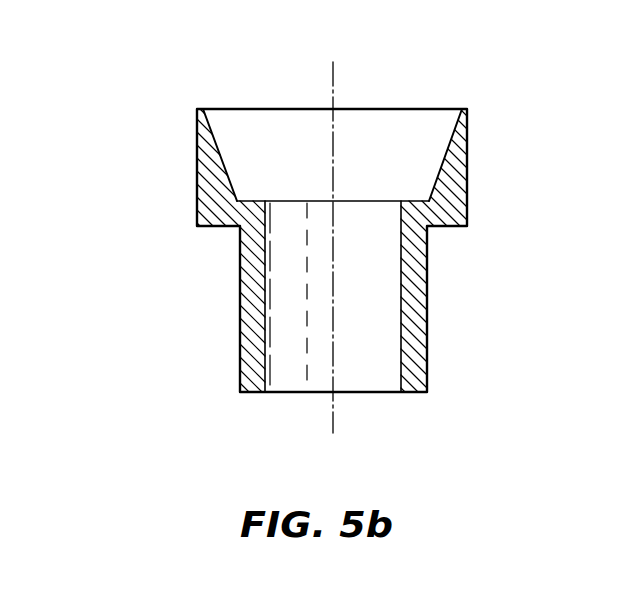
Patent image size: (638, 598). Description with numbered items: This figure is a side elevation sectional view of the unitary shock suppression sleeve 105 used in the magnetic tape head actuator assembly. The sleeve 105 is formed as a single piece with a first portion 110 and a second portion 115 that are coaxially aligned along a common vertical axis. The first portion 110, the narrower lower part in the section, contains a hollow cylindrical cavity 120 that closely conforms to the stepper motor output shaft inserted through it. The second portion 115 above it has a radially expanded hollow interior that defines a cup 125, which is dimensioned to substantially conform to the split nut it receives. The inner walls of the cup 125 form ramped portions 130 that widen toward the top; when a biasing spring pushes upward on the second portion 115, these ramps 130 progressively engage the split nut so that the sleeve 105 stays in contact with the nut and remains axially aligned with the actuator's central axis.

The unitary shock suppression sleeve 105 is at (146, 274).
The first portion 110 is at (427, 297).
The second portion 115 is at (470, 153).
The hollow cylindrical cavity 120 is at (367, 365).
The cup 125 is at (362, 145).
The ramped portions 130 is at (217, 140).